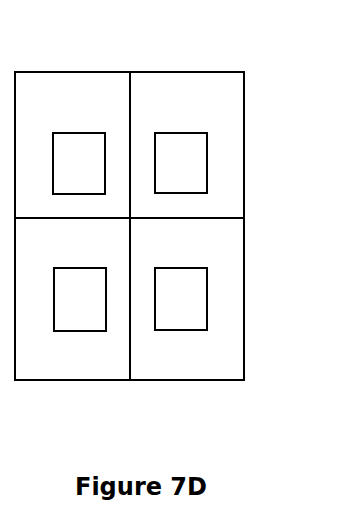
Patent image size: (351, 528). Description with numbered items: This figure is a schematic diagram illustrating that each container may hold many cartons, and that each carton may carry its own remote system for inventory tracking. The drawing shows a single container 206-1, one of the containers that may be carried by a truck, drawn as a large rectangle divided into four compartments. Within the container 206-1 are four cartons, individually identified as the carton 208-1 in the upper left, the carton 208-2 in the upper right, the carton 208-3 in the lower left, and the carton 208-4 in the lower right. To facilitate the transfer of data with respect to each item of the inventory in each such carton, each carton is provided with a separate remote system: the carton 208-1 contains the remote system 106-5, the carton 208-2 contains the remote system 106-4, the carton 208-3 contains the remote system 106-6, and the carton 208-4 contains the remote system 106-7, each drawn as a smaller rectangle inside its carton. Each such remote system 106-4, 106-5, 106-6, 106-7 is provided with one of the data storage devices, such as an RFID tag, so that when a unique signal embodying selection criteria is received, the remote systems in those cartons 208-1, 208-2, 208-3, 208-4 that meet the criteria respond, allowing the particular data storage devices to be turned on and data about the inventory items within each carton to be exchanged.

The container 206-1 is at (66, 72).
The carton 208-1 is at (103, 121).
The carton 208-2 is at (218, 157).
The carton 208-3 is at (80, 366).
The carton 208-4 is at (194, 366).
The remote system 106-4 is at (193, 181).
The remote system 106-5 is at (188, 170).
The remote system 106-6 is at (189, 284).
The remote system 106-7 is at (193, 317).